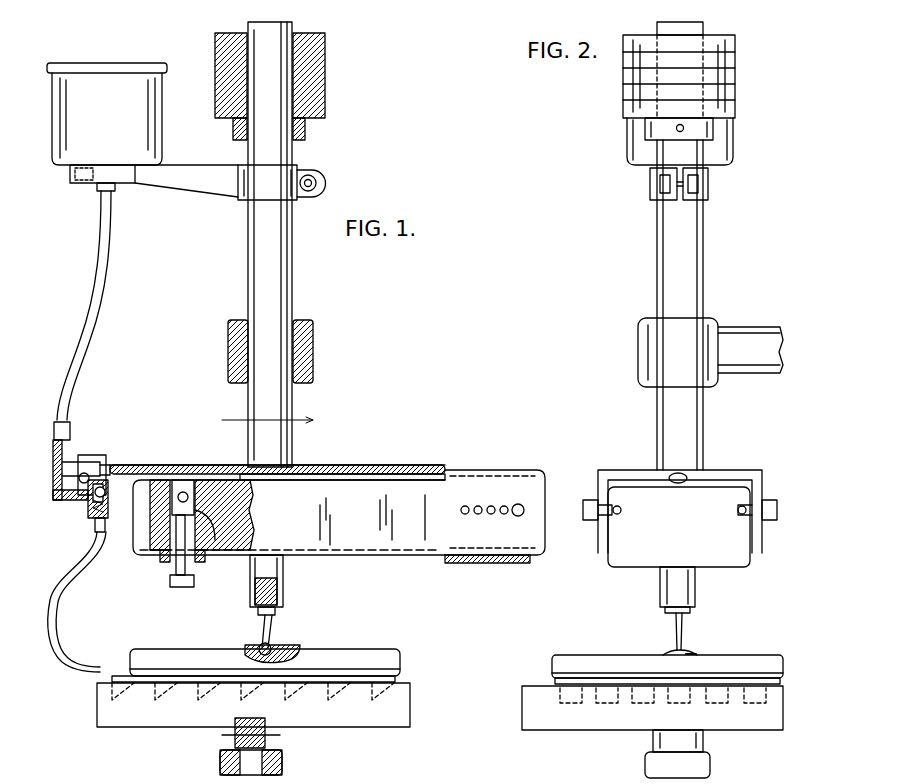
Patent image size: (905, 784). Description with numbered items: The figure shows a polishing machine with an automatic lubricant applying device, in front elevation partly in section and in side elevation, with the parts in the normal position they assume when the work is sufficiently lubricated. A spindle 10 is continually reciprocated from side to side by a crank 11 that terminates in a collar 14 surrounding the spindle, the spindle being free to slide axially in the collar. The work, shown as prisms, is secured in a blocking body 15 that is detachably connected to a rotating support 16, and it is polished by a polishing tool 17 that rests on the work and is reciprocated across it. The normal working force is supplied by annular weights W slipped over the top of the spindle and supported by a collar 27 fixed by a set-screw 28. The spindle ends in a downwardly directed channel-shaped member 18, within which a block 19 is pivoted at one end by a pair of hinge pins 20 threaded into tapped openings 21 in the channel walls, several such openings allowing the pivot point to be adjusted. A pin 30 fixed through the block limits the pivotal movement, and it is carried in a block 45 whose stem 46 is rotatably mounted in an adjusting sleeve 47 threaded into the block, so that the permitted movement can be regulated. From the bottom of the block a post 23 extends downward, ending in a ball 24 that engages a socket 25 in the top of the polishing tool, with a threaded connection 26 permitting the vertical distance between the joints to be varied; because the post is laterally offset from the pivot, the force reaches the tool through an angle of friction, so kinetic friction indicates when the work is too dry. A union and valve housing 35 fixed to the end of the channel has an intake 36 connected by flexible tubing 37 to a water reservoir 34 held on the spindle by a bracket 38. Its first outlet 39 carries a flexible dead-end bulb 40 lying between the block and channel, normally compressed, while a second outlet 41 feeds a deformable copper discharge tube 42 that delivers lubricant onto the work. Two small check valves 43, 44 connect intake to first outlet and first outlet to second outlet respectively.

In FIG. 1, the annular weights W is at (222, 43).
In FIG. 2, the annular weights W is at (640, 94).
In FIG. 1, the spindle 10 is at (248, 254).
In FIG. 2, the spindle 10 is at (663, 258).
In FIG. 2, the crank 11 is at (770, 346).
In FIG. 1, the collar 14 is at (232, 320).
In FIG. 2, the collar 14 is at (640, 332).
In FIG. 1, the blocking body 15 is at (410, 708).
In FIG. 2, the blocking body 15 is at (612, 725).
In FIG. 1, the support 16 is at (282, 765).
In FIG. 2, the support 16 is at (710, 766).
In FIG. 1, the polishing tool 17 is at (360, 658).
In FIG. 2, the polishing tool 17 is at (600, 660).
In FIG. 1, the channel-shaped member 18 is at (412, 465).
In FIG. 2, the channel-shaped member 18 is at (628, 470).
In FIG. 1, the block 19 is at (420, 545).
In FIG. 2, the block 19 is at (630, 556).
In FIG. 1, the hinge pins 20 is at (518, 504).
In FIG. 2, the hinge pins 20 is at (590, 520).
In FIG. 1, the tapped openings 21 is at (478, 504).
In FIG. 1, the post 23 is at (280, 572).
In FIG. 2, the post 23 is at (688, 585).
In FIG. 1, the ball 24 is at (274, 652).
In FIG. 2, the ball 24 is at (686, 651).
In FIG. 1, the socket 25 is at (259, 648).
In FIG. 2, the socket 25 is at (700, 654).
In FIG. 1, the threaded connection 26 is at (255, 590).
In FIG. 1, the collar 27 is at (233, 133).
In FIG. 2, the collar 27 is at (645, 133).
In FIG. 1, the set-screw 28 is at (305, 131).
In FIG. 2, the set-screw 28 is at (676, 130).
In FIG. 1, the pin 30 is at (205, 545).
In FIG. 1, the reservoir 34 is at (107, 114).
In FIG. 2, the reservoir 34 is at (728, 158).
In FIG. 1, the union and valve housing 35 is at (53, 468).
In FIG. 1, the intake 36 is at (54, 434).
In FIG. 1, the flexible tubing 37 is at (80, 338).
In FIG. 1, the bracket 38 is at (202, 188).
In FIG. 2, the bracket 38 is at (655, 192).
In FIG. 1, the first outlet 39 is at (112, 462).
In FIG. 1, the dead-end bulb 40 is at (195, 466).
In FIG. 2, the dead-end bulb 40 is at (686, 475).
In FIG. 1, the second outlet 41 is at (95, 525).
In FIG. 1, the discharge tube 42 is at (68, 592).
In FIG. 1, the check valve 43 is at (78, 482).
In FIG. 1, the check valve 44 is at (88, 497).
In FIG. 1, the block 45 is at (175, 478).
In FIG. 1, the stem 46 is at (172, 582).
In FIG. 1, the adjusting sleeve 47 is at (152, 556).